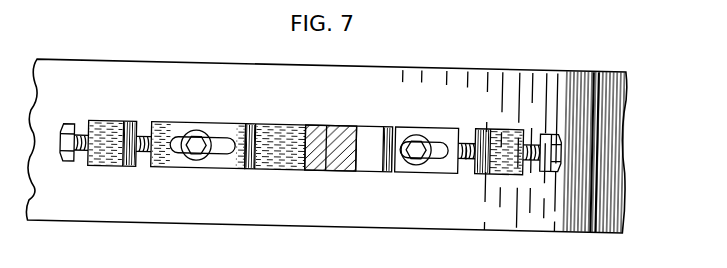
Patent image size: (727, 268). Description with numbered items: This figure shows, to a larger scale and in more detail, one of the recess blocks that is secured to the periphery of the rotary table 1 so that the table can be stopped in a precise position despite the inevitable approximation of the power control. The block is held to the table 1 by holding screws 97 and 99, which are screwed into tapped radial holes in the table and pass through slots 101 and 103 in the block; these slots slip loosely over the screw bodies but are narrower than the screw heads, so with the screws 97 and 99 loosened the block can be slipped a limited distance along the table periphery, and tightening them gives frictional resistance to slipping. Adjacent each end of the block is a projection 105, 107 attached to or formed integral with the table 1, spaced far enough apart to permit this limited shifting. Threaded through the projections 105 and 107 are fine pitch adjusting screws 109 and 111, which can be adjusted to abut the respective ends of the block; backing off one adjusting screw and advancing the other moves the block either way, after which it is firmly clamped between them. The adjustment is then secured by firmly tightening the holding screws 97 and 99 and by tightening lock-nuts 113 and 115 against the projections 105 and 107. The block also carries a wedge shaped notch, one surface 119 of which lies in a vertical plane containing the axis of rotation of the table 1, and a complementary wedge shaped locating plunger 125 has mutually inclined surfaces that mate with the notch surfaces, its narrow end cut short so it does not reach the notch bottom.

The table 1 is at (611, 100).
The screw 97 is at (202, 146).
The screw 99 is at (423, 144).
The slot 101 is at (229, 139).
The slot 103 is at (440, 136).
The projection 105 is at (123, 120).
The projection 107 is at (511, 130).
The adjusting screw 109 is at (154, 148).
The adjusting screw 111 is at (469, 134).
The lock-nut 113 is at (94, 131).
The lock-nut 115 is at (529, 149).
The surface of notch 119 is at (307, 134).
The locating plunger 125 is at (342, 158).